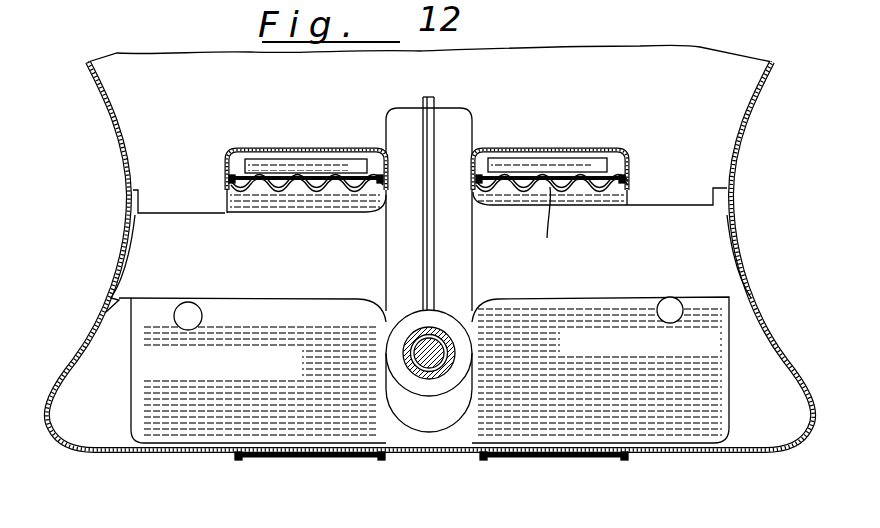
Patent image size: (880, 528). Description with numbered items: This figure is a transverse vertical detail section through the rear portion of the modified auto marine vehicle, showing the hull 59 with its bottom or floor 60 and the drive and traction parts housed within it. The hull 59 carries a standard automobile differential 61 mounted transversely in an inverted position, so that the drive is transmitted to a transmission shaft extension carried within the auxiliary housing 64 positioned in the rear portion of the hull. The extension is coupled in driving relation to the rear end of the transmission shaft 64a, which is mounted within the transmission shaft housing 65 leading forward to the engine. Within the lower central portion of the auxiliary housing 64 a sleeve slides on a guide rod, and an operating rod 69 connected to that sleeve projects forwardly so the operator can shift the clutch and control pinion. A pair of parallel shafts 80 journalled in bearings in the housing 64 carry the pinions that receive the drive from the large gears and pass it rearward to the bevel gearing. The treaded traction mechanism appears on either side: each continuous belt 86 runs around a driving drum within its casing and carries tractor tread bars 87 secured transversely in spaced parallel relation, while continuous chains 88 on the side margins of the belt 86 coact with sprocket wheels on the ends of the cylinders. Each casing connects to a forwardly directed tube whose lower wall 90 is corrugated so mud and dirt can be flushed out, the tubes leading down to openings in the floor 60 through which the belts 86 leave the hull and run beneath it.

The auto marine vehicle hull 59 is at (120, 152).
The bottom or floor 60 is at (740, 451).
The automobile differential 61 is at (428, 250).
The auxiliary housing 64 is at (703, 393).
The transmission shaft 64a is at (412, 357).
The transmission shaft housing 65 is at (446, 364).
The operating rod 69 is at (347, 411).
The parallel shafts 80 is at (624, 179).
The continuous belt 86 is at (583, 188).
The tractor tread bars 87 is at (270, 176).
The continuous chains 88 is at (228, 160).
The lower wall 90 is at (554, 223).